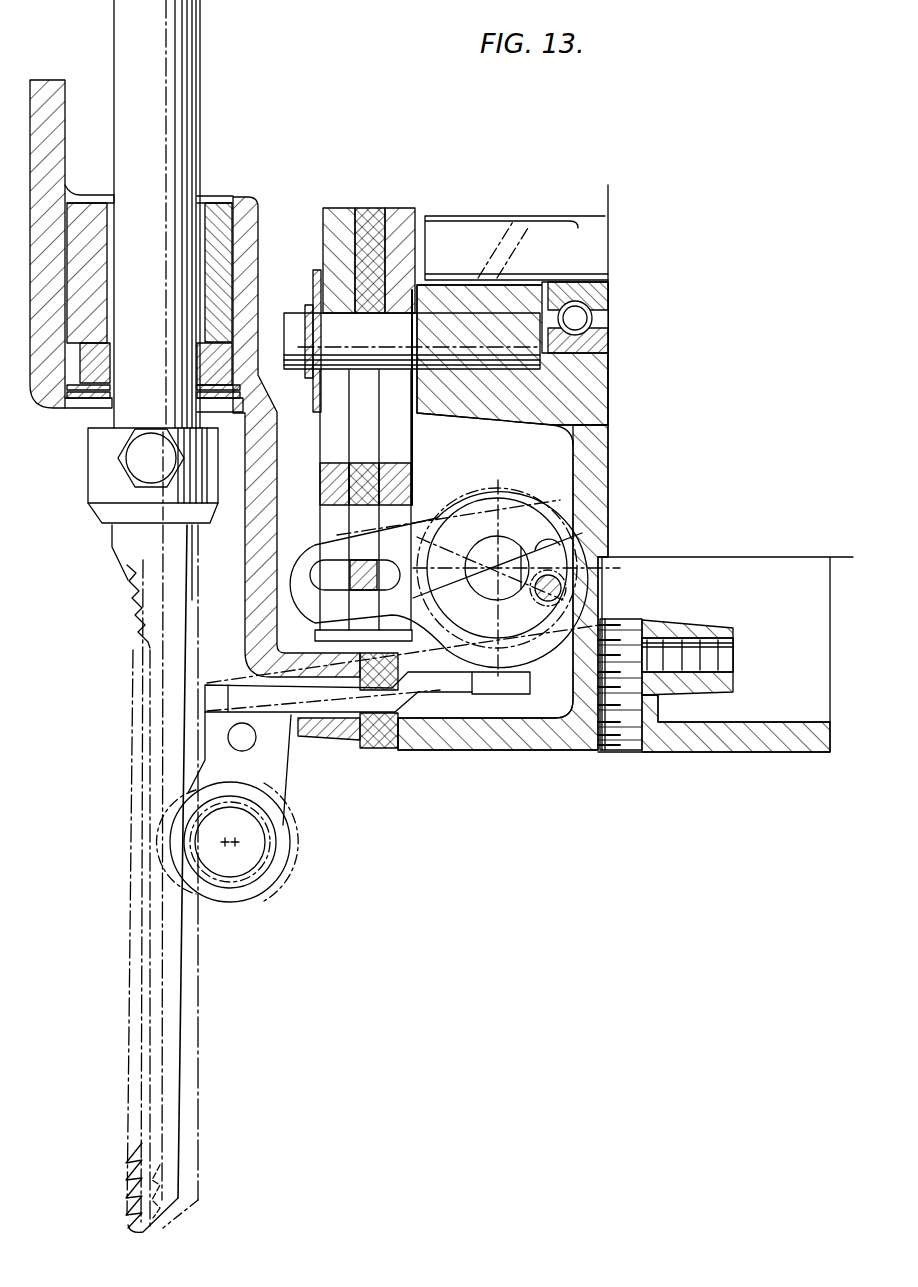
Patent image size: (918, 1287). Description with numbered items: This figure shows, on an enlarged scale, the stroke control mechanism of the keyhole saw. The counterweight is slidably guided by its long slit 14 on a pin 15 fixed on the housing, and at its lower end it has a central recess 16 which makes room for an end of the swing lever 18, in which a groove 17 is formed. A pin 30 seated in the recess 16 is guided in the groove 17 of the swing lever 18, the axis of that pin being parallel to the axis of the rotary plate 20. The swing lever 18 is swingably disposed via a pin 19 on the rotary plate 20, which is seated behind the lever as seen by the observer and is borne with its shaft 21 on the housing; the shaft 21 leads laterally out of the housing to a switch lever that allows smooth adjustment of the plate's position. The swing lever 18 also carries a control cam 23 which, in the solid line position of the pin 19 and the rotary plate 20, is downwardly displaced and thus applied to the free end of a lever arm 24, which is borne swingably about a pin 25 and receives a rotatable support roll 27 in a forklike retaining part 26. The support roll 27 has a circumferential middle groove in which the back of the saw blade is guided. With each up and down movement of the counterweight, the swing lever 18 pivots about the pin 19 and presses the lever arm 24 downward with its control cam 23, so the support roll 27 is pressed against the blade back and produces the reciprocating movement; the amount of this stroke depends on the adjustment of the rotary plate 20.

The long slit 14 is at (400, 440).
The pin 15 is at (412, 341).
The central recess 16 is at (327, 517).
The groove 17 is at (332, 575).
The swing lever 18 is at (348, 623).
The pin 19 is at (546, 602).
The rotary plate 20 is at (483, 492).
The shaft 21 is at (489, 611).
The control cam 23 is at (470, 662).
The lever arm 24 is at (497, 690).
The pin 25 is at (250, 746).
The forklike retaining part 26 is at (293, 745).
The support roll 27 is at (204, 902).
The pin 30 is at (368, 587).